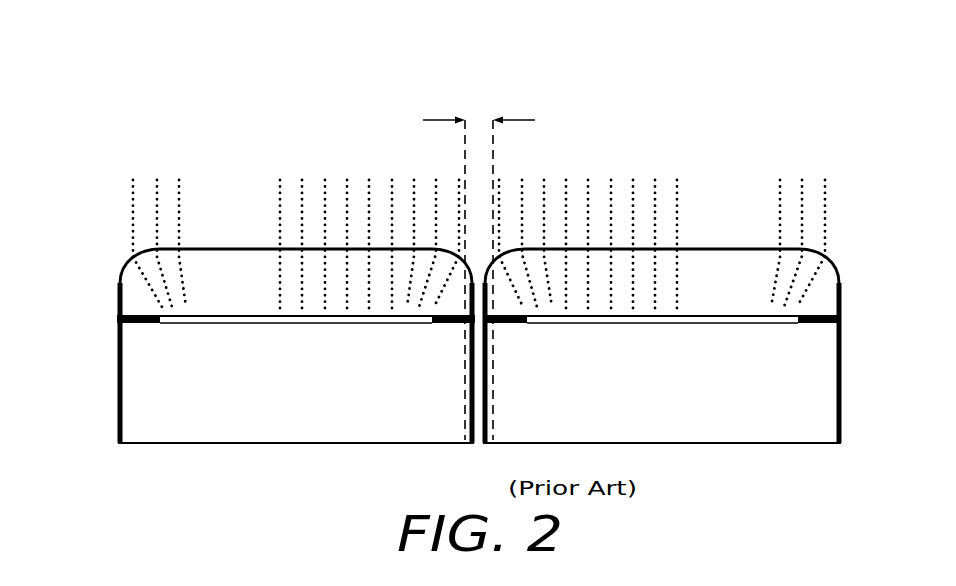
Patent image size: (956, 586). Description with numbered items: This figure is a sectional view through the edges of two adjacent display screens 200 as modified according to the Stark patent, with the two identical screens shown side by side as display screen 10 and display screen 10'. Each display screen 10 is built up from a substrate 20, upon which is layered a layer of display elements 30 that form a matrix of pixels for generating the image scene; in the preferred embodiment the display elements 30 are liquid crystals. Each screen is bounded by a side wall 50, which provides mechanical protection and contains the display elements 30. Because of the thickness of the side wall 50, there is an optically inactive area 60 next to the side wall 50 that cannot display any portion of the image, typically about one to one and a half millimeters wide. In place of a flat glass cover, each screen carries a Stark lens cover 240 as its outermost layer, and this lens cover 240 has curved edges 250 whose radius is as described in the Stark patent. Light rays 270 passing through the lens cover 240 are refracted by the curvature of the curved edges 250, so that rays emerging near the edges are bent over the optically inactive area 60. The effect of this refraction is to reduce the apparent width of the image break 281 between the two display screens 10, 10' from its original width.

The display screen 10 is at (252, 261).
The display screen 10' is at (662, 234).
The substrate 20 is at (229, 420).
The display elements 30 is at (234, 320).
The side wall 50 is at (470, 404).
The optically inactive area 60 is at (447, 322).
The display screens 200 is at (697, 91).
The Stark lens cover 240 is at (230, 277).
The curved edges 250 is at (127, 276).
The light rays 270 is at (179, 180).
The image break 281 is at (482, 118).